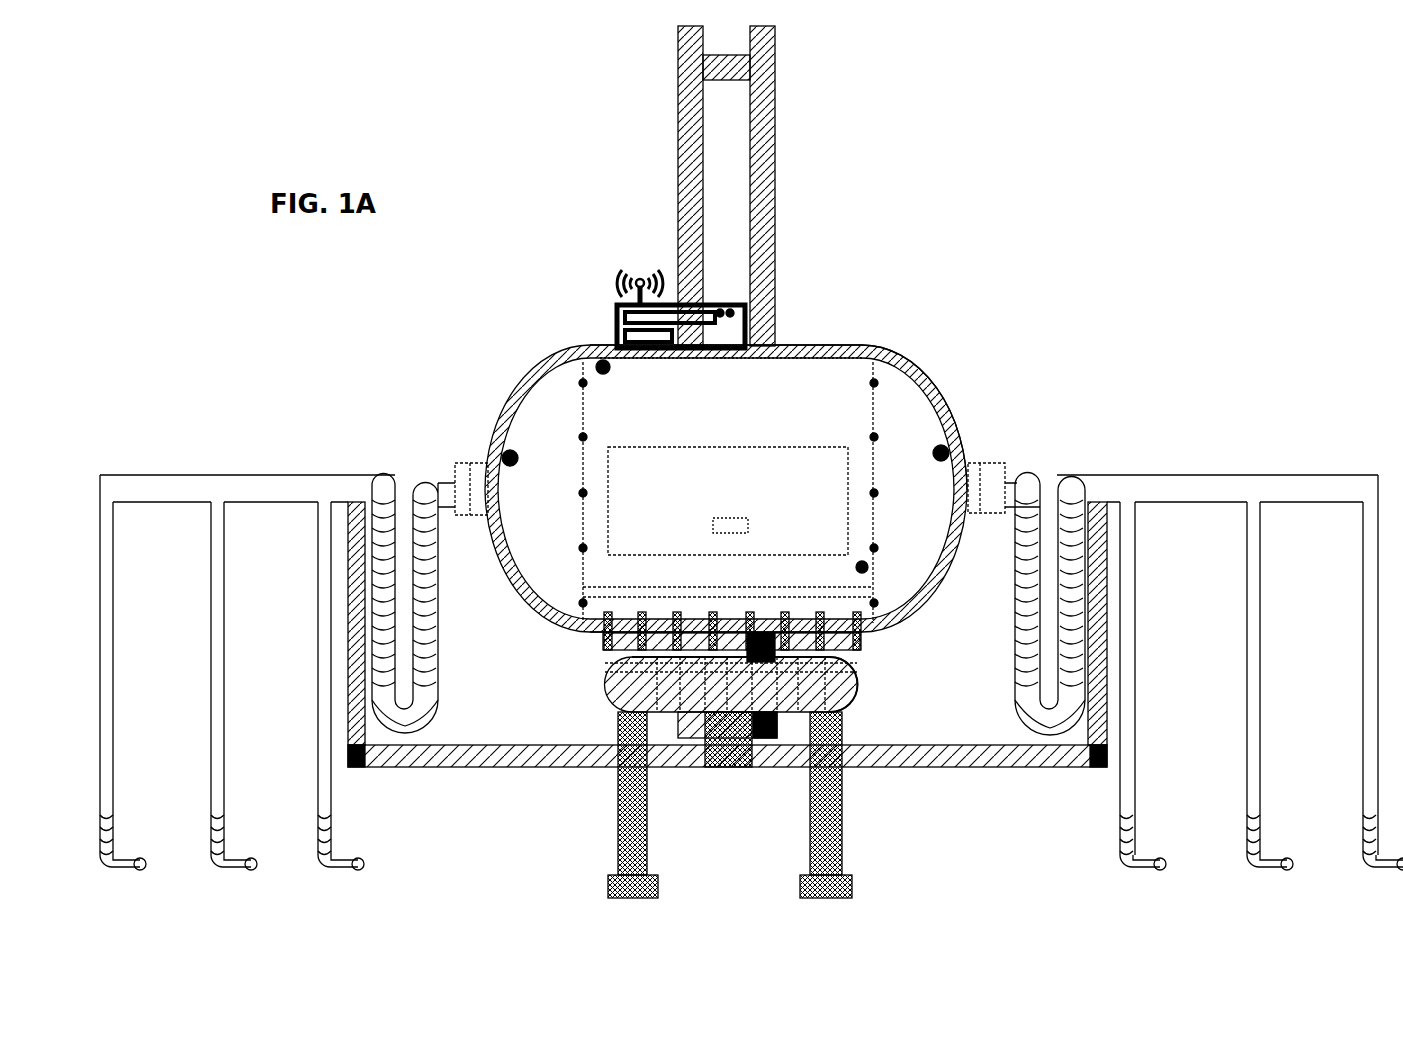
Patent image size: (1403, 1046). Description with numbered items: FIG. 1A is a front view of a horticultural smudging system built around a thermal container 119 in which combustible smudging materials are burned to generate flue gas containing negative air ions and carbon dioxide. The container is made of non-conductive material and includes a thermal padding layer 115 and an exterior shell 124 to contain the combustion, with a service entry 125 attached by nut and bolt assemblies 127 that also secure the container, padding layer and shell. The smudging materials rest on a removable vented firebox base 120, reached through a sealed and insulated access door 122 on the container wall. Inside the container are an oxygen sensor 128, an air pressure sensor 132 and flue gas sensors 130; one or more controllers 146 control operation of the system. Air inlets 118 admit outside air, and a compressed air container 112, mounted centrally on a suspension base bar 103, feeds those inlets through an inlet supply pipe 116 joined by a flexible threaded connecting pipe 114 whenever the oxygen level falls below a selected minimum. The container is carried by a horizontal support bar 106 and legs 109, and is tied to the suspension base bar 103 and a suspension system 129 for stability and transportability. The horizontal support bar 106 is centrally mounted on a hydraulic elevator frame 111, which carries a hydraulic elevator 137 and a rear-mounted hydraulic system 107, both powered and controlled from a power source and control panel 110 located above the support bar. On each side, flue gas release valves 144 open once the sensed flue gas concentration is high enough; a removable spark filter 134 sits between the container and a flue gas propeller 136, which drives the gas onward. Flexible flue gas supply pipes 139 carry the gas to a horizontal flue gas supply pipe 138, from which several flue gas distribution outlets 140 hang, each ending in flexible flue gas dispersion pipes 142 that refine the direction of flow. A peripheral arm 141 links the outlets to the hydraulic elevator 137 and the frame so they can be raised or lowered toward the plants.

The suspension base bar 103 is at (640, 700).
The horizontal support bar 106 is at (968, 760).
The hydraulic system 107 is at (763, 737).
The legs 109 is at (827, 842).
The power source and control panel 110 is at (745, 758).
The hydraulic elevator frame 111 is at (778, 72).
The compressed air container 112 is at (850, 692).
The flexible threaded connecting pipe 114 is at (727, 662).
The thermal padding layer 115 is at (858, 352).
The inlet supply pipe 116 is at (612, 643).
The air inlets 118 is at (862, 622).
The thermal container 119 is at (800, 372).
The removable vented firebox base 120 is at (600, 592).
The sealed and insulated access door 122 is at (607, 520).
The exterior shell 124 is at (910, 366).
The service entry 125 is at (583, 413).
The nut and bolt assemblies 127 is at (578, 383).
The oxygen sensor 128 is at (873, 570).
The suspension system 129 is at (847, 660).
The flue gas sensors 130 is at (493, 487).
The air pressure sensor 132 is at (598, 352).
The removable spark filter 134 is at (970, 470).
The flue gas propeller 136 is at (1000, 483).
The hydraulic elevator 137 is at (358, 770).
The horizontal flue gas supply pipe 138 is at (228, 487).
The flexible flue gas supply pipes 139 is at (368, 492).
The flue gas distribution outlets 140 is at (1252, 562).
The peripheral arm 141 is at (348, 672).
The flexible flue gas dispersion pipes 142 is at (1142, 852).
The flue gas release valves 144 is at (478, 487).
The controllers 146 is at (638, 278).